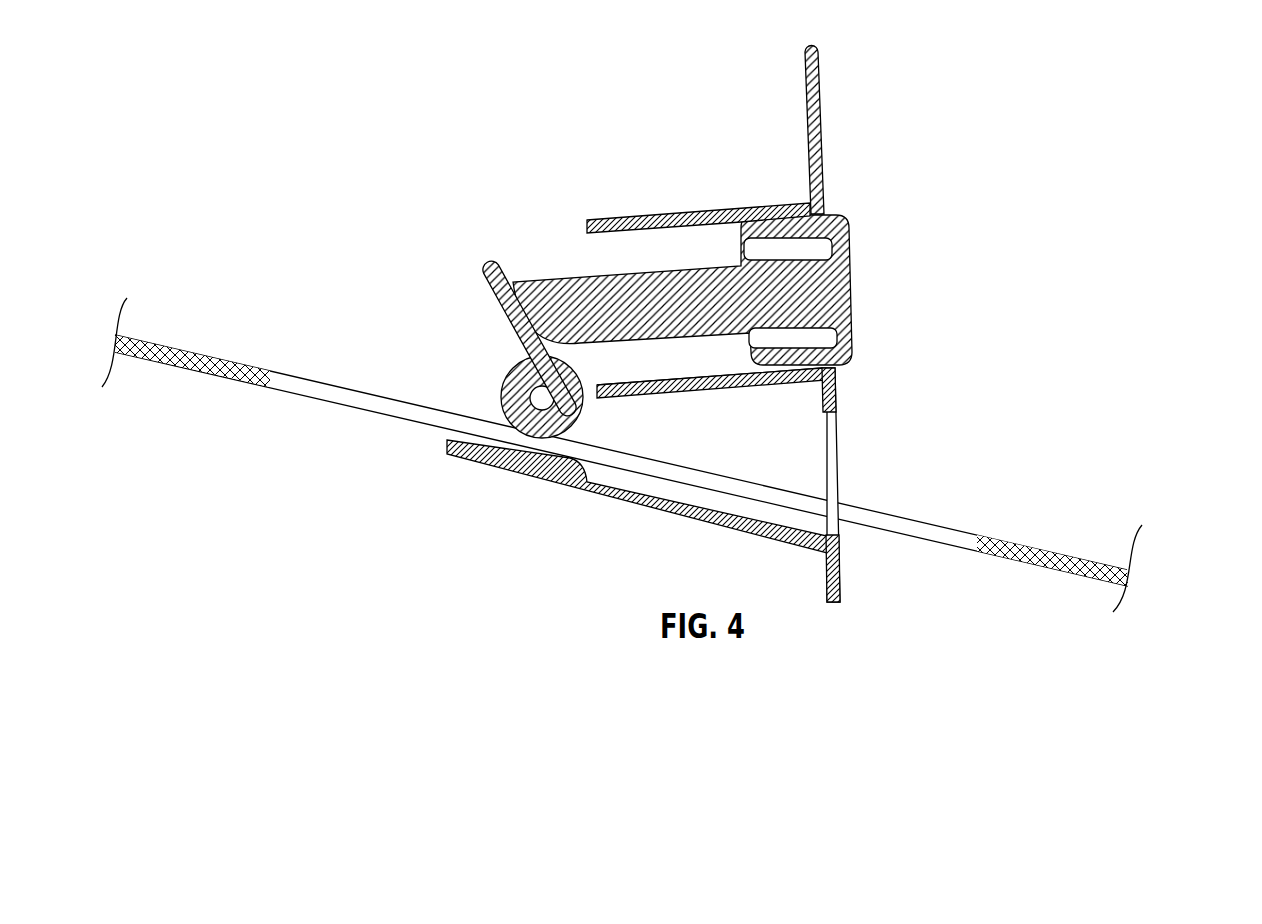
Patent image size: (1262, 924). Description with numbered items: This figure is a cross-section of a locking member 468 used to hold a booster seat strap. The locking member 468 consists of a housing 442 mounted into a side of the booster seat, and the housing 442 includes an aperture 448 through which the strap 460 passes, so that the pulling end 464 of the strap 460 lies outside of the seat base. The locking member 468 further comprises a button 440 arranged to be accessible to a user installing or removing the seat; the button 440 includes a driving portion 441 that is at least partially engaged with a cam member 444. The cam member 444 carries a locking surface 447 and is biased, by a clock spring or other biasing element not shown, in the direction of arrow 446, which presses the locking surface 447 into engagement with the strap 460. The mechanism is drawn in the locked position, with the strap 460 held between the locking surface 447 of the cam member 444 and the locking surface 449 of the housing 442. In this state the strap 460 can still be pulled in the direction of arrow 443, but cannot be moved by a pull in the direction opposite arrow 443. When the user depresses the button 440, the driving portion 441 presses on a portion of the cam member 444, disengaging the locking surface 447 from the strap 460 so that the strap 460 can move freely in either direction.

The button 440 is at (738, 273).
The driving portion 441 is at (560, 294).
The housing 442 is at (843, 588).
The arrow 443 is at (1250, 603).
The cam member 444 is at (484, 272).
The arrow 446 is at (455, 292).
The locking surface 447 is at (500, 396).
The aperture 448 is at (856, 455).
The locking surface 449 is at (515, 452).
The strap 460 is at (267, 380).
The pulling end 464 is at (1098, 562).
The locking member 468 is at (868, 91).